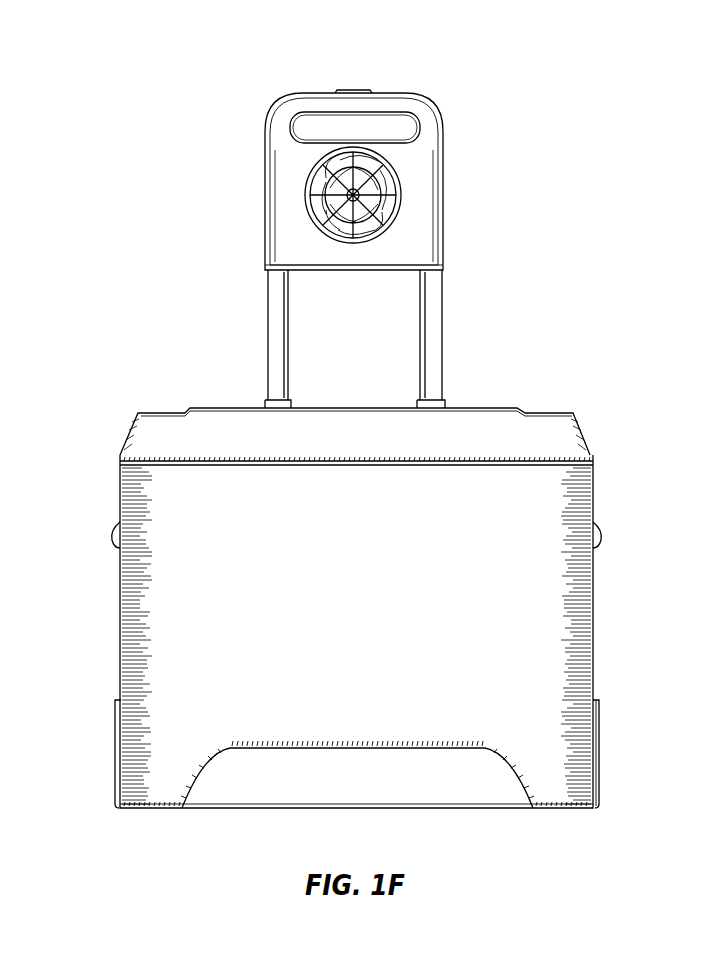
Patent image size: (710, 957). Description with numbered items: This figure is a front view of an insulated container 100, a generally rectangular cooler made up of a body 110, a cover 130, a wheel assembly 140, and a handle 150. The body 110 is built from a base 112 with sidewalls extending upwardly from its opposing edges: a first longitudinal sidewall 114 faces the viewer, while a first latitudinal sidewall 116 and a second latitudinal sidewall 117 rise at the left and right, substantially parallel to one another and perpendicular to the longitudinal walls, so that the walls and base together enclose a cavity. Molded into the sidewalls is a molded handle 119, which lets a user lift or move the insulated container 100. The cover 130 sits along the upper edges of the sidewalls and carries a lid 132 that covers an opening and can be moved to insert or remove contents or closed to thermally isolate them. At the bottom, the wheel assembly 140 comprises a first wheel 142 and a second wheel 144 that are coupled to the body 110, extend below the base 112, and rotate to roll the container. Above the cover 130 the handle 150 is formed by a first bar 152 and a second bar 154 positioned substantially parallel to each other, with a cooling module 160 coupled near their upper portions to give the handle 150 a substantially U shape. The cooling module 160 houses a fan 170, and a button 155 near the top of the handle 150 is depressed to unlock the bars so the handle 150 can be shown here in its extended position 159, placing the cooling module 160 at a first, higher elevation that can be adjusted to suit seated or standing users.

The insulated container 100 is at (130, 78).
The body 110 is at (605, 653).
The base 112 is at (496, 812).
The first longitudinal sidewall 114 is at (170, 636).
The first latitudinal sidewall 116 is at (595, 598).
The second latitudinal sidewall 117 is at (120, 596).
The molded handle 119 is at (113, 545).
The cover 130 is at (585, 432).
The lid 132 is at (487, 407).
The wheel assembly 140 is at (600, 733).
The first wheel 142 is at (600, 776).
The second wheel 144 is at (116, 756).
The handle 150 is at (352, 182).
The first bar 152 is at (442, 333).
The second bar 154 is at (268, 333).
The button 155 is at (352, 91).
The extended position 159 is at (255, 111).
The cooling module 160 is at (268, 215).
The fan 170 is at (352, 240).